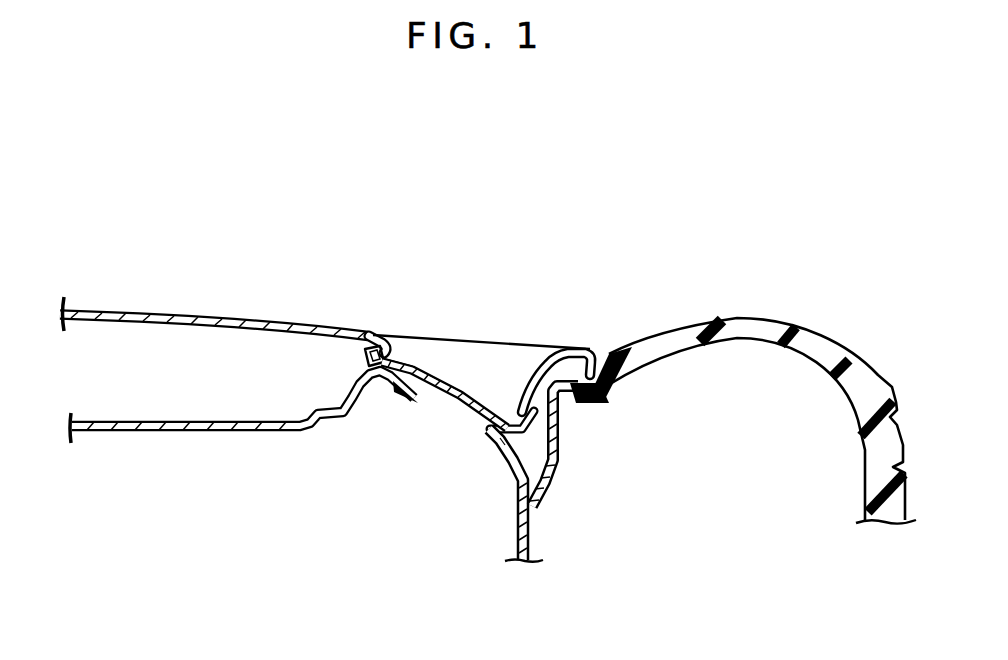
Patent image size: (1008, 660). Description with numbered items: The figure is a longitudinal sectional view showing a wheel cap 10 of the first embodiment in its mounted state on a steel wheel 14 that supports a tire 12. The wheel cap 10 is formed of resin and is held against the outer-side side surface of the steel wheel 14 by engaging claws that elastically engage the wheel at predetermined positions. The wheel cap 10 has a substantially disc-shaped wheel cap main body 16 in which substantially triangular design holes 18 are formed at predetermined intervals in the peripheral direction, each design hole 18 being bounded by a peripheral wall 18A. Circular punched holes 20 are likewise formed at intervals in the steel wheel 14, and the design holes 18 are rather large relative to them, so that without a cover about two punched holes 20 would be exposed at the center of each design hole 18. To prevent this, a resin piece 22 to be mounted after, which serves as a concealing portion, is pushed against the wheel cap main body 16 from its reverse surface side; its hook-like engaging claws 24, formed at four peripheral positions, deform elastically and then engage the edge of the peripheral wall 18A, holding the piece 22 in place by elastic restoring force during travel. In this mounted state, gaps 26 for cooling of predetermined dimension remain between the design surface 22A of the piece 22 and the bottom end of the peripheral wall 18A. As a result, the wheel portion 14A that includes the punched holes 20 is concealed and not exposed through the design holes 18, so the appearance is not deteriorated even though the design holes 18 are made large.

The wheel cap 10 is at (405, 227).
The tire 12 is at (753, 326).
The steel wheel 14 is at (533, 530).
The wheel portion 14A is at (430, 378).
The wheel cap main body 16 is at (277, 316).
The design hole 18 is at (495, 366).
The peripheral wall 18A is at (520, 410).
The punched hole 20 is at (488, 429).
The piece to be mounted after 22 is at (411, 365).
The design surface 22A is at (461, 380).
The engaging claw 24 is at (365, 352).
The gap for cooling 26 is at (498, 438).